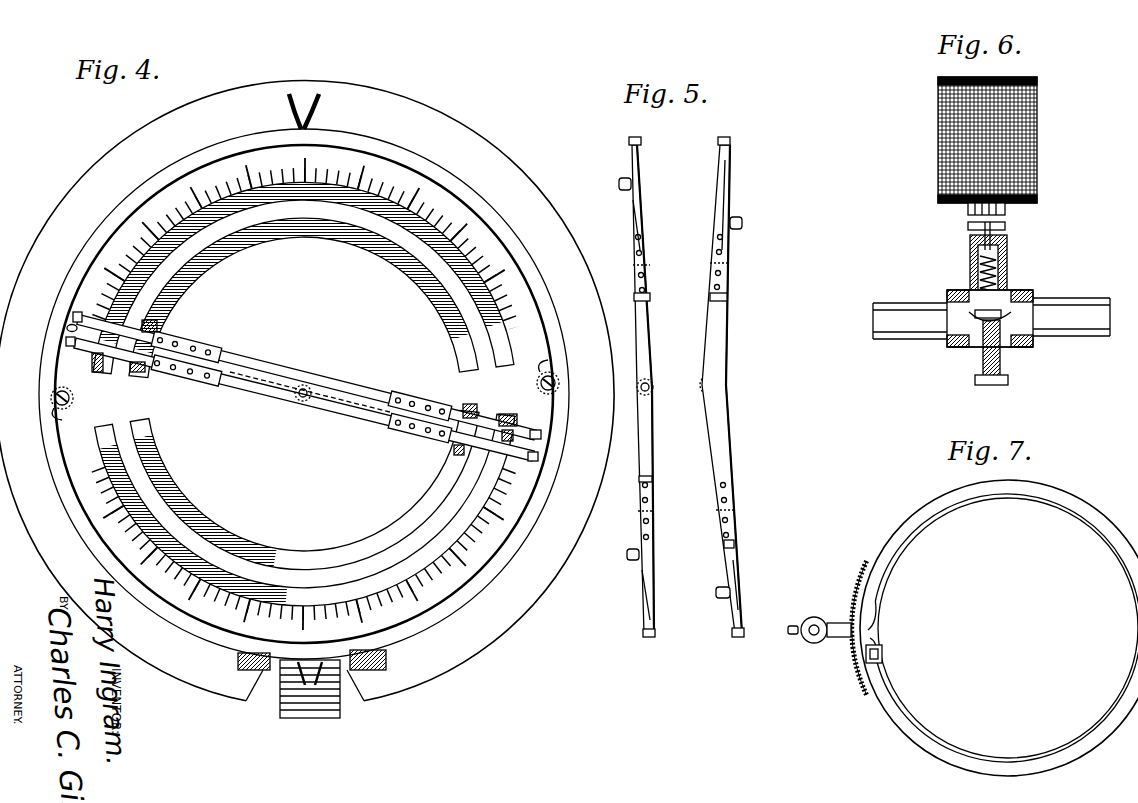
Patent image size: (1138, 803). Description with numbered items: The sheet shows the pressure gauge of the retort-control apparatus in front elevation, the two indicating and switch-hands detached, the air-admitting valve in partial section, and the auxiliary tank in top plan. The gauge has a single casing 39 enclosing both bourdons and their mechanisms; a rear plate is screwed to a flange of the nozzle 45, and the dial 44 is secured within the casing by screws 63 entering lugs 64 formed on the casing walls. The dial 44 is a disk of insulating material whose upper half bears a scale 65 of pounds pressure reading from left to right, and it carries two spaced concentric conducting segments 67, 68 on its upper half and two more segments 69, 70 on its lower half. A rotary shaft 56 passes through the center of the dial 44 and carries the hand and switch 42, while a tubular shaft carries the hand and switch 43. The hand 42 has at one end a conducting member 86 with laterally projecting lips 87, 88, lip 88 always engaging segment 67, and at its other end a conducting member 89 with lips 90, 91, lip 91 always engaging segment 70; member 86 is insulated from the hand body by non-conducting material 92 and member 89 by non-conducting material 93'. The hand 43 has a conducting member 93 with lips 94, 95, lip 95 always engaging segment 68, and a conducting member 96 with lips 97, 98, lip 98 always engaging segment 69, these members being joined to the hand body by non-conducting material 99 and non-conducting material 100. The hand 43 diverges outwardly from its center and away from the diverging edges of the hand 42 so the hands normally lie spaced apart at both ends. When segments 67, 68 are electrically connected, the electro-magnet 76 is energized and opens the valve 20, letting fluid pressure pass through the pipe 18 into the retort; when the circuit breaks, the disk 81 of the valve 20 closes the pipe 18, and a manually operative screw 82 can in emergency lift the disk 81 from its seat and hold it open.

In FIG. 6, the pipe 18 is at (991, 324).
In FIG. 6, the valve 20 is at (1008, 260).
In FIG. 4, the casing 39 is at (307, 391).
In FIG. 4, the hand and switch 42 is at (262, 388).
In FIG. 5, the hand and switch 42 is at (645, 352).
In FIG. 4, the hand and switch 43 is at (285, 362).
In FIG. 5, the hand and switch 43 is at (718, 343).
In FIG. 4, the dial 44 is at (304, 376).
In FIG. 4, the nozzle 45 is at (312, 707).
In FIG. 4, the rotary shaft 56 is at (303, 401).
In FIG. 4, the screws 63 is at (55, 399).
In FIG. 4, the lugs 64 is at (60, 431).
In FIG. 4, the scale 65 is at (392, 166).
In FIG. 4, the conducting segment 67 is at (420, 232).
In FIG. 4, the conducting segment 68 is at (432, 268).
In FIG. 4, the conducting segment 69 is at (465, 514).
In FIG. 4, the conducting segment 70 is at (377, 541).
In FIG. 6, the electro-magnet 76 is at (1036, 157).
In FIG. 6, the valve disk 81 is at (1002, 312).
In FIG. 6, the manually operative screw 82 is at (1001, 374).
In FIG. 4, the conducting member 86 is at (135, 373).
In FIG. 5, the conducting member 86 is at (640, 212).
In FIG. 4, the lip 87 is at (66, 341).
In FIG. 5, the lip 87 is at (642, 142).
In FIG. 4, the lip 88 is at (92, 362).
In FIG. 5, the lip 88 is at (619, 184).
In FIG. 4, the conducting member 89 is at (470, 420).
In FIG. 5, the conducting member 89 is at (649, 602).
In FIG. 4, the lip 90 is at (538, 457).
In FIG. 5, the lip 90 is at (655, 632).
In FIG. 4, the lip 91 is at (455, 449).
In FIG. 5, the lip 91 is at (627, 556).
In FIG. 4, the non-conducting material 92 is at (186, 380).
In FIG. 5, the non-conducting material 92 is at (650, 298).
In FIG. 5, the conducting member 93 is at (743, 205).
In FIG. 4, the non-conducting material 93' is at (419, 432).
In FIG. 5, the non-conducting material 93' is at (663, 501).
In FIG. 4, the lip 94 is at (73, 318).
In FIG. 5, the lip 94 is at (728, 138).
In FIG. 4, the lip 95 is at (157, 326).
In FIG. 5, the lip 95 is at (742, 223).
In FIG. 4, the conducting member 96 is at (503, 414).
In FIG. 5, the conducting member 96 is at (740, 568).
In FIG. 4, the lip 97 is at (541, 434).
In FIG. 5, the lip 97 is at (732, 632).
In FIG. 4, the lip 98 is at (513, 431).
In FIG. 5, the lip 98 is at (722, 587).
In FIG. 4, the non-conducting material 99 is at (240, 356).
In FIG. 5, the non-conducting material 99 is at (727, 297).
In FIG. 4, the non-conducting material 100 is at (408, 402).
In FIG. 5, the non-conducting material 100 is at (734, 545).